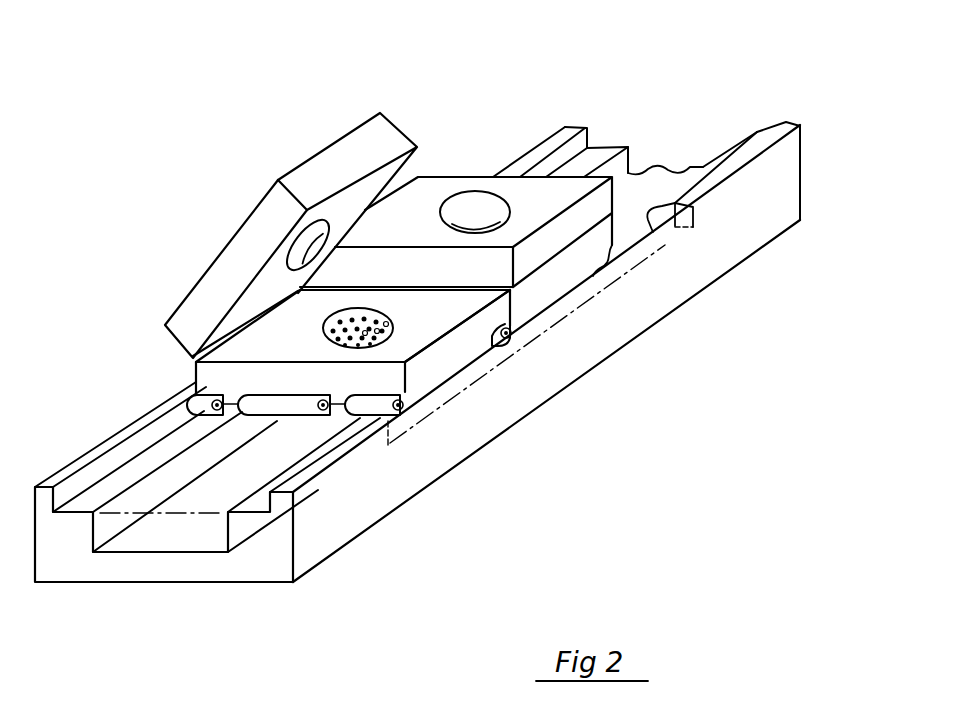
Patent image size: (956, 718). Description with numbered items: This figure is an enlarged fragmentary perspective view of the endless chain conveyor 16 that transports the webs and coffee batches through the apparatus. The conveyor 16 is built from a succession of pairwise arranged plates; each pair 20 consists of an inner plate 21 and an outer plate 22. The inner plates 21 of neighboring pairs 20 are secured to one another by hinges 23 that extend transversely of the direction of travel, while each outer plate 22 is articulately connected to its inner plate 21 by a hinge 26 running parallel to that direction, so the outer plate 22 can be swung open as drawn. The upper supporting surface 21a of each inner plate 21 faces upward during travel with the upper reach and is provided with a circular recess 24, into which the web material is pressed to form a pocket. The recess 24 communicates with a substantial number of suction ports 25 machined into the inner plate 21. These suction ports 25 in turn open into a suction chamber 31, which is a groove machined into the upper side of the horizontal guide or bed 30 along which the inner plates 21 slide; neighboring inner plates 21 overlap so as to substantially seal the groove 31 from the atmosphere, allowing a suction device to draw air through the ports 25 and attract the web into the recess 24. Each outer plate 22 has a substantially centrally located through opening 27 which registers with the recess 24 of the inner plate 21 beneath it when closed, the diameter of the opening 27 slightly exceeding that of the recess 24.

The endless chain conveyor 16 is at (453, 157).
The pair of plates 20 is at (432, 93).
The inner plate 21 is at (222, 377).
The upper supporting surface 21a is at (300, 354).
The outer plate 22 is at (258, 247).
The hinge 23 is at (513, 333).
The circular recess 24 is at (414, 318).
The suction ports 25 is at (397, 330).
The hinge 26 is at (223, 337).
The through opening 27 is at (482, 210).
The horizontal guide or bed 30 is at (323, 525).
The suction chamber 31 is at (180, 538).